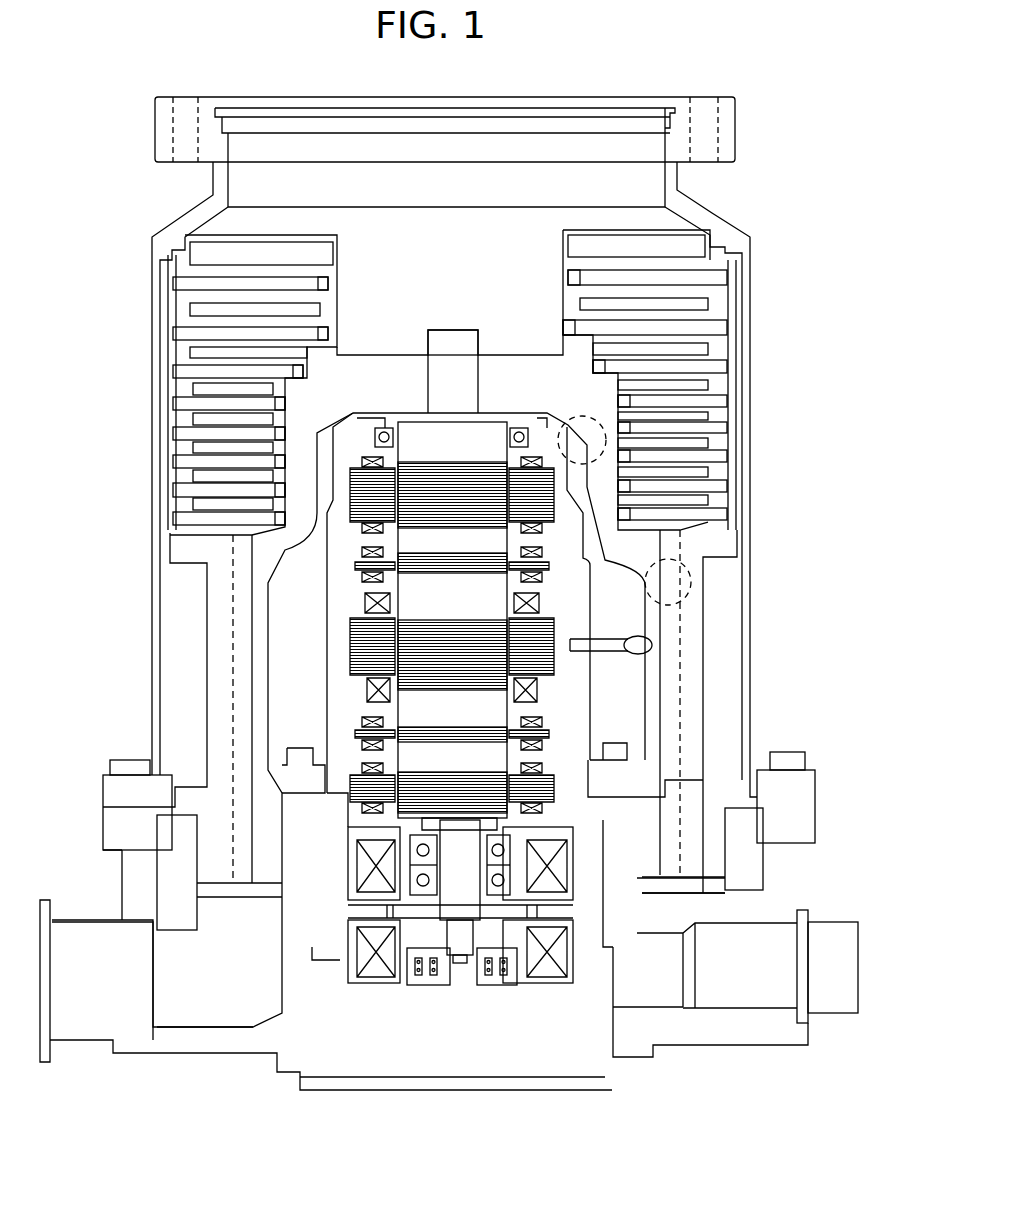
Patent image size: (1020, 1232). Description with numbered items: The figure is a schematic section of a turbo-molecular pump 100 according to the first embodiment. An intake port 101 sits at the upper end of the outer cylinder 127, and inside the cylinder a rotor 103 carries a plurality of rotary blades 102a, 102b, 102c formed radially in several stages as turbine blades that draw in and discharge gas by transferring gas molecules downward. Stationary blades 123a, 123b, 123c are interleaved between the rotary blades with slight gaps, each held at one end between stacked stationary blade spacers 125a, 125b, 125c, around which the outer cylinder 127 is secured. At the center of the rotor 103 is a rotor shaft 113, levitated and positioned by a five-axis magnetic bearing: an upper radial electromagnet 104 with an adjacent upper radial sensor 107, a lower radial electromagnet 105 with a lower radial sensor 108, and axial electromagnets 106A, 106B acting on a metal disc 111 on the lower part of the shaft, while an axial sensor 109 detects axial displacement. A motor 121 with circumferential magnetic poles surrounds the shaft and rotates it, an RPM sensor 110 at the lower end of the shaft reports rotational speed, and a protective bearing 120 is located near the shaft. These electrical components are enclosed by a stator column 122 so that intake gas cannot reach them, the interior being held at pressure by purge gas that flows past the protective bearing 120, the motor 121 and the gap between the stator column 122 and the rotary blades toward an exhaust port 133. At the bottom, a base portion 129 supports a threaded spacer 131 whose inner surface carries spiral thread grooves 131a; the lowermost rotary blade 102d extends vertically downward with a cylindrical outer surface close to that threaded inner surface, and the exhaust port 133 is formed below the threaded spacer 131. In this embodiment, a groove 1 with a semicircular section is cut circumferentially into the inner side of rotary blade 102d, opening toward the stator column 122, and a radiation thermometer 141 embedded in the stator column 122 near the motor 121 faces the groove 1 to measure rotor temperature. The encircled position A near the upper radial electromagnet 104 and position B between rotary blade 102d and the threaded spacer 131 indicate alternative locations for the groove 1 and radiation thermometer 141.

The groove 1 is at (590, 650).
The turbo-molecular pump 100 is at (460, 963).
The intake port 101 is at (640, 157).
The rotary blade 102a is at (222, 255).
The rotary blade 102b is at (175, 352).
The rotary blade 102c is at (183, 383).
The rotary blade 102d is at (655, 873).
The rotor 103 is at (552, 262).
The upper radial electromagnet 104 is at (553, 486).
The lower radial electromagnet 105 is at (563, 777).
The axial electromagnet 106A is at (560, 862).
The axial electromagnet 106B is at (547, 975).
The upper radial sensor 107 is at (370, 566).
The lower radial sensor 108 is at (563, 737).
The axial sensor 109 is at (430, 985).
The RPM sensor 110 is at (498, 985).
The metal disc 111 is at (400, 912).
The rotor shaft 113 is at (413, 590).
The protective bearing 120 is at (403, 850).
The motor 121 is at (340, 632).
The stator column 122 is at (335, 730).
The stationary blade 123a is at (190, 310).
The stationary blade 123b is at (195, 364).
The stationary blade 123c is at (175, 430).
The stationary blade spacer 125a is at (173, 282).
The stationary blade spacer 125b is at (165, 332).
The stationary blade spacer 125c is at (173, 402).
The outer cylinder 127 is at (173, 500).
The base portion 129 is at (750, 832).
The threaded spacer 131 is at (222, 653).
The thread groove 131a is at (243, 683).
The exhaust port 133 is at (82, 953).
The radiation thermometer 141 is at (580, 632).
The position A is at (598, 440).
The position B is at (685, 568).